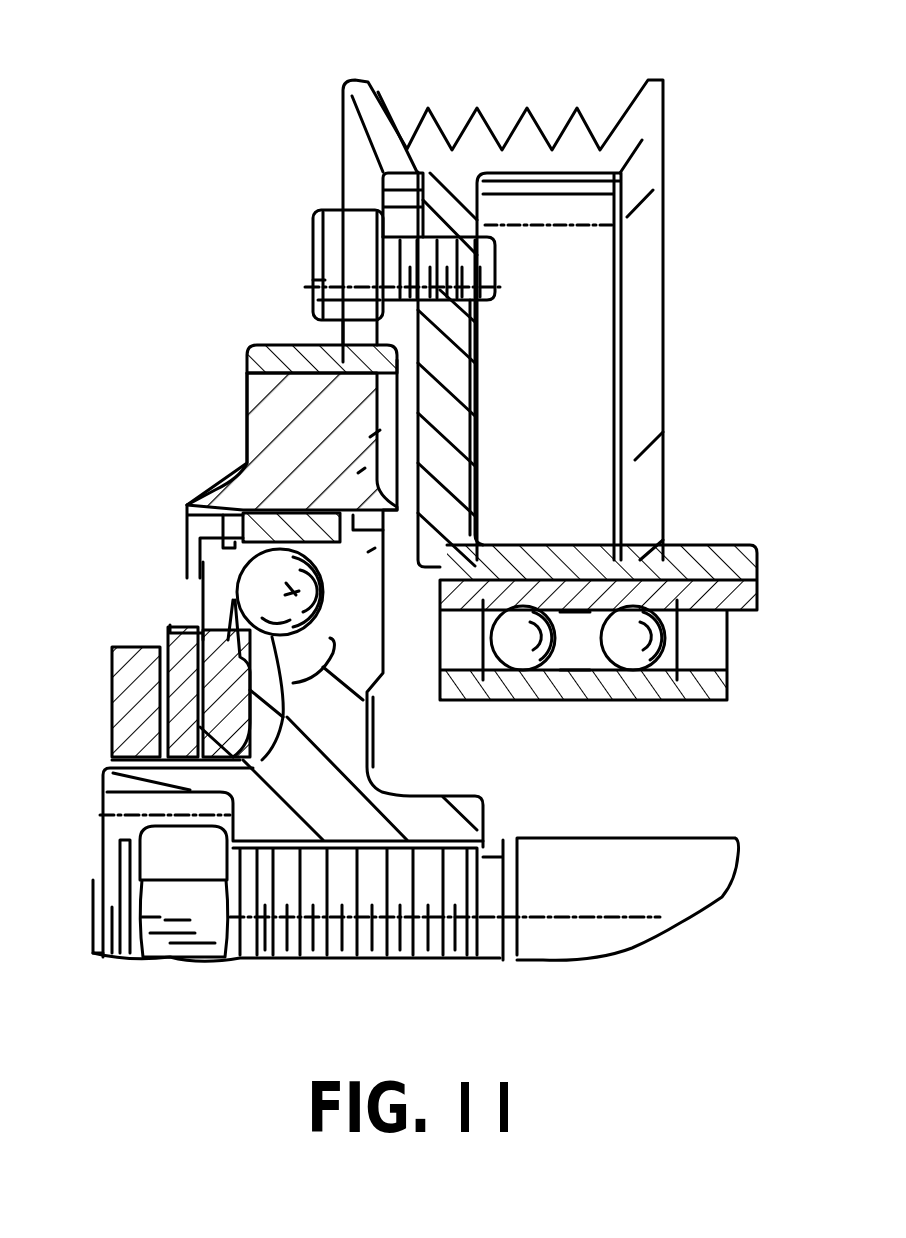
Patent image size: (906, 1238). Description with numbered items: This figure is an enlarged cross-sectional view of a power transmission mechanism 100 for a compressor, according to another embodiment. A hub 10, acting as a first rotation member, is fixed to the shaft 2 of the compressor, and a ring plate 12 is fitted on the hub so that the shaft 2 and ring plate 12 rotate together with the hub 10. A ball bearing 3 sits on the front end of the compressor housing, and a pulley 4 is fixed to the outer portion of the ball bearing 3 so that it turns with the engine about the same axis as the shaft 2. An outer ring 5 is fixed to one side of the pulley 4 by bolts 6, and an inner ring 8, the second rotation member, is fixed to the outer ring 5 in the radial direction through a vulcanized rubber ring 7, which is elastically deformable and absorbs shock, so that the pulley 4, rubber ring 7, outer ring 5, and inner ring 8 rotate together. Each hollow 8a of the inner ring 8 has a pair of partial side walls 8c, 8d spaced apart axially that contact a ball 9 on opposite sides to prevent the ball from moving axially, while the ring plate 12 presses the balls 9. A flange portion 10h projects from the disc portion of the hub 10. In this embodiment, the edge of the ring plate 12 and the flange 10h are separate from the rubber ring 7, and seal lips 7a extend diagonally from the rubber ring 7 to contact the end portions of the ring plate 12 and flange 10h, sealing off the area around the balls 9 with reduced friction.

The power transmission mechanism 100 is at (185, 218).
The pulley 4 is at (541, 113).
The bolts 6 is at (312, 256).
The outer ring 5 is at (291, 346).
The rubber ring 7 is at (270, 413).
The seal lips 7a is at (360, 527).
The inner ring 8 is at (220, 470).
The hollow 8a is at (380, 430).
The partial side wall 8c is at (365, 468).
The partial side wall 8d is at (193, 500).
The hub 10 is at (343, 788).
The flange portion 10h is at (375, 548).
The ball 9 is at (350, 560).
The ring plate 12 is at (217, 610).
The ball bearing 3 is at (727, 637).
The shaft 2 is at (632, 860).